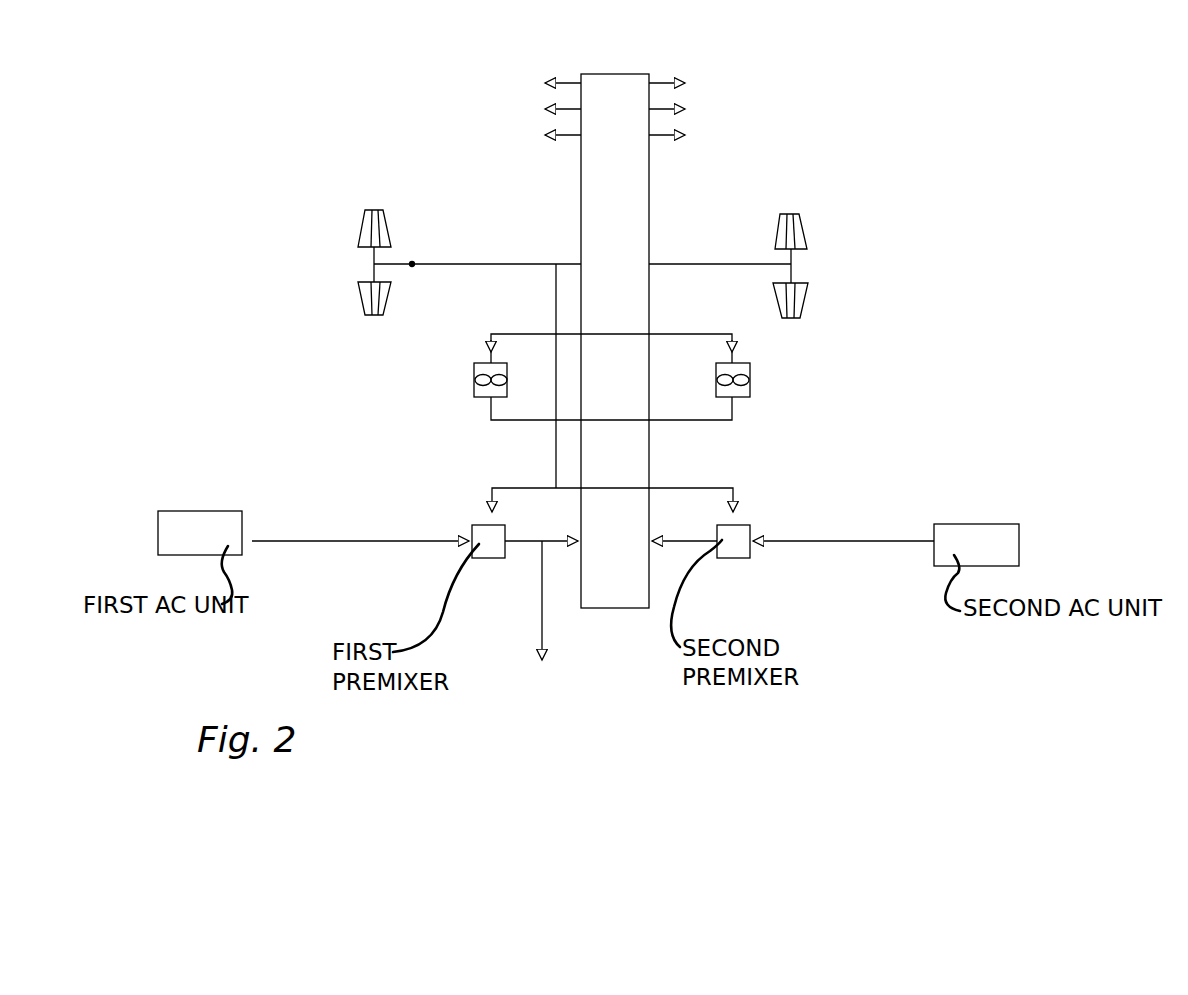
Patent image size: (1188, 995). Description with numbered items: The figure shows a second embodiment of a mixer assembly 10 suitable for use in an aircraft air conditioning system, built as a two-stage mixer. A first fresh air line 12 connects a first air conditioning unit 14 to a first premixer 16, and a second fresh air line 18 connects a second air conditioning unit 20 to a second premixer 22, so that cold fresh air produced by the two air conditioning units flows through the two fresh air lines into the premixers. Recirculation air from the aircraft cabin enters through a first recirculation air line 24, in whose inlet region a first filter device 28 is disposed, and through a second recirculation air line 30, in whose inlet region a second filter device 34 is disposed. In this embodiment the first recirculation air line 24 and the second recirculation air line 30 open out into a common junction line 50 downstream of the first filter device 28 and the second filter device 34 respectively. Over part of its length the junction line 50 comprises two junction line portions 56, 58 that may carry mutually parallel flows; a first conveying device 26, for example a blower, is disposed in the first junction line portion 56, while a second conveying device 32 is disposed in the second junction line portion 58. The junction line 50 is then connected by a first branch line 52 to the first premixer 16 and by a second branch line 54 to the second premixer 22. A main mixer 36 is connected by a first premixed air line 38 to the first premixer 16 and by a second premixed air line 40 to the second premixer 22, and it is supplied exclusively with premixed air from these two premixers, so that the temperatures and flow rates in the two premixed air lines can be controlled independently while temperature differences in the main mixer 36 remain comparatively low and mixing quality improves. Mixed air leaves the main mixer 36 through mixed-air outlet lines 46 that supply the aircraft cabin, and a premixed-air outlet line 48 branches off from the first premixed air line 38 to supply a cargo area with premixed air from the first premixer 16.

The mixer assembly 10 is at (837, 155).
The first fresh air line 12 is at (318, 541).
The first air conditioning unit 14 is at (188, 520).
The first premixer 16 is at (483, 554).
The second fresh air line 18 is at (838, 541).
The second air conditioning unit 20 is at (962, 534).
The second premixer 22 is at (726, 556).
The first recirculation air line 24 is at (440, 264).
The first conveying device 26 is at (474, 382).
The first filter device 28 is at (372, 210).
The second recirculation air line 30 is at (727, 264).
The second conveying device 32 is at (750, 380).
The second filter device 34 is at (800, 226).
The main mixer 36 is at (641, 200).
The first premixed air line 38 is at (528, 541).
The second premixed air line 40 is at (680, 541).
The mixed-air outlet lines 46 is at (526, 132).
The premixed-air outlet line 48 is at (538, 614).
The junction line 50 is at (560, 306).
The first branch line 52 is at (512, 480).
The second branch line 54 is at (690, 488).
The first junction line portion 56 is at (486, 346).
The second junction line portion 58 is at (738, 344).